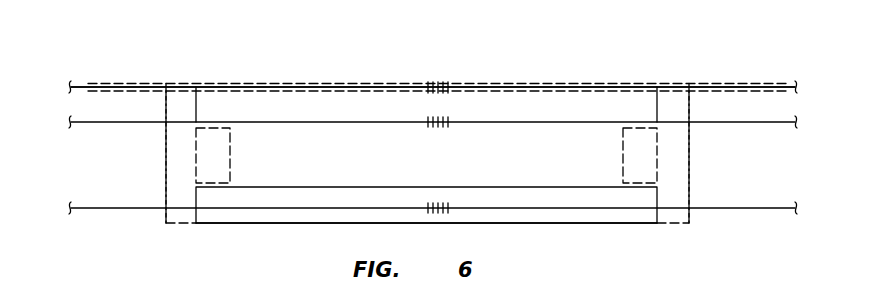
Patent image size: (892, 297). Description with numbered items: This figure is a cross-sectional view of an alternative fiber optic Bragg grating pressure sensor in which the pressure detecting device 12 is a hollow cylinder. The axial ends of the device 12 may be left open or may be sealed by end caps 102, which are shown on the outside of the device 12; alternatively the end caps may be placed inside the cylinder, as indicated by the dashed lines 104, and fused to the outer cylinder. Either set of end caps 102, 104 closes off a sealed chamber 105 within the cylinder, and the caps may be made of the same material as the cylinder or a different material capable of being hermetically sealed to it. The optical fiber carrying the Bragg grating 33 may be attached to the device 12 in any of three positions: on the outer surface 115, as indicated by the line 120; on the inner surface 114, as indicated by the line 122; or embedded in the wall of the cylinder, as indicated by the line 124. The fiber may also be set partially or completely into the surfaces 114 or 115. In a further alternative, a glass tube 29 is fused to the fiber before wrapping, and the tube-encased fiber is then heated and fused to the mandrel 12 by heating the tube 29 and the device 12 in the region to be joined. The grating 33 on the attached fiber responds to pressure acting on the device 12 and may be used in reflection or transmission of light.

The pressure detecting device 12 is at (215, 83).
The glass tube 29 is at (160, 83).
The Bragg grating 33 is at (446, 86).
The end caps 102 is at (173, 148).
The end caps (inside, dashed lines) 104 is at (222, 170).
The sealed chamber 105 is at (437, 167).
The inner surface 114 is at (340, 124).
The outer surface 115 is at (282, 86).
The line indicating fiber attachment on the outer surface 120 is at (98, 86).
The line indicating fiber attachment on the inner surface 122 is at (93, 124).
The line indicating fiber attachment in the wall 124 is at (102, 210).